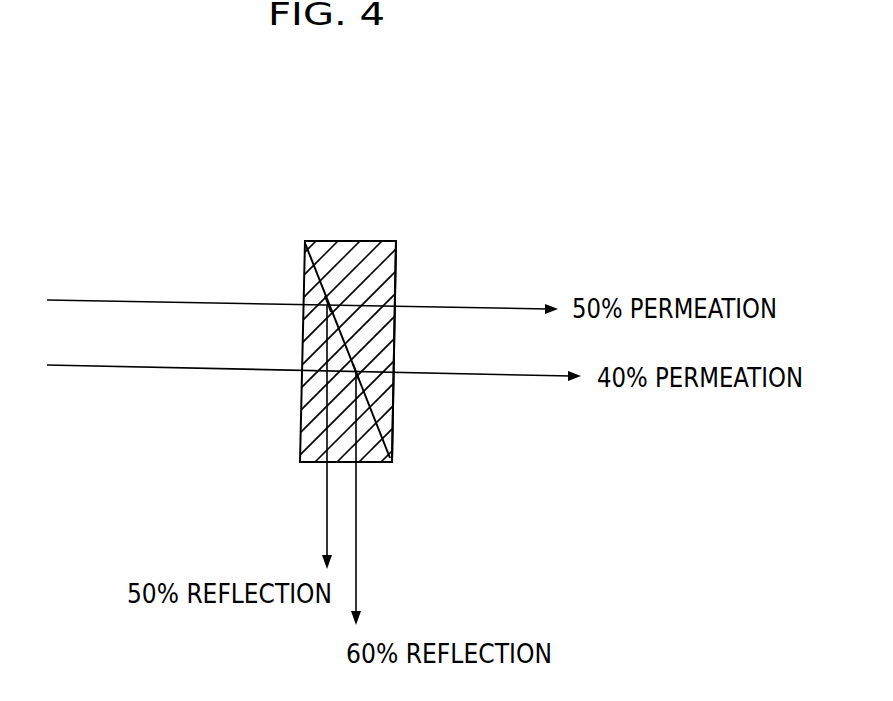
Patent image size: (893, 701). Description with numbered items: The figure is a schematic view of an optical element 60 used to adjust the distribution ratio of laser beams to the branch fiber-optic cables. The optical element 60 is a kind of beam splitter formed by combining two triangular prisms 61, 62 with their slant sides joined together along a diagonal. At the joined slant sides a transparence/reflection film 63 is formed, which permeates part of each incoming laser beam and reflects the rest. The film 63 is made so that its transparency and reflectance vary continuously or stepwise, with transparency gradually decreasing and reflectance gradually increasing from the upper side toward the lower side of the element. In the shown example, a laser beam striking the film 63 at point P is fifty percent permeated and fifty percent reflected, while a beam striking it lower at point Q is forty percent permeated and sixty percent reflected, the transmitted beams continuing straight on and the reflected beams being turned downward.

The optical element 60 is at (387, 186).
The triangular prism 61 is at (303, 430).
The triangular prism 62 is at (392, 241).
The transparence/reflection film 63 is at (393, 422).
The point P is at (336, 303).
The point Q is at (361, 367).